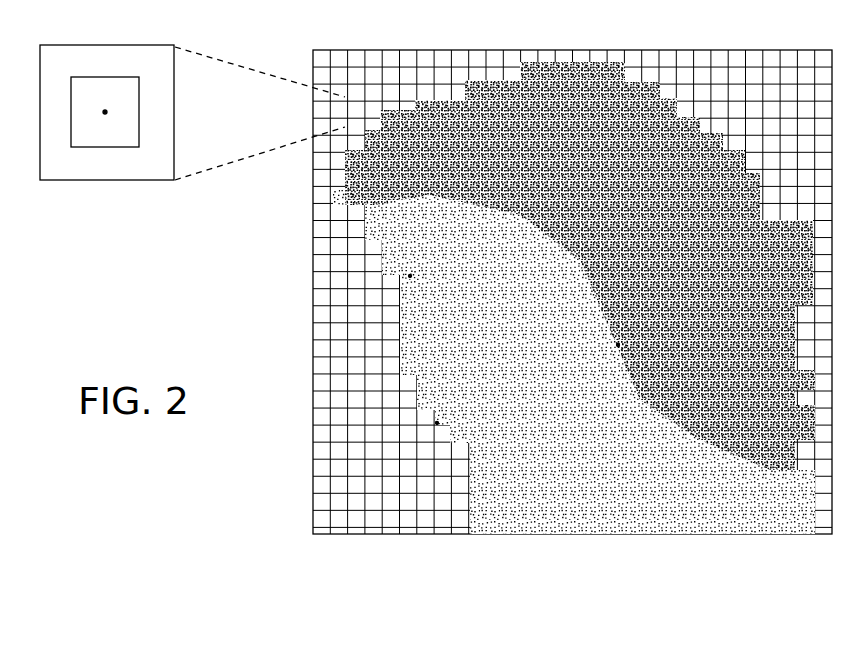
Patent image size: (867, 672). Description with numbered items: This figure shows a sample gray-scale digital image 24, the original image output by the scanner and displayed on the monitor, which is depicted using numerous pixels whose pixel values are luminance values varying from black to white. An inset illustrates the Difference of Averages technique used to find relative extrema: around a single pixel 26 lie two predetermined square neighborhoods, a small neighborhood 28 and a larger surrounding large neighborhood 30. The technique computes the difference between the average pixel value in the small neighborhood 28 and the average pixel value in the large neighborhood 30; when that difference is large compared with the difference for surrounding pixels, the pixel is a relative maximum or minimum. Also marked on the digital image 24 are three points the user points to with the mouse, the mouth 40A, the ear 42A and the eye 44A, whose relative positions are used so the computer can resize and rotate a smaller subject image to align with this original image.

The large neighborhood 30 is at (53, 45).
The small neighborhood 28 is at (80, 77).
The pixel 26 is at (105, 110).
The digital image 24 is at (313, 228).
The eye 44A is at (410, 276).
The mouth 40A is at (437, 423).
The ear 42A is at (618, 345).